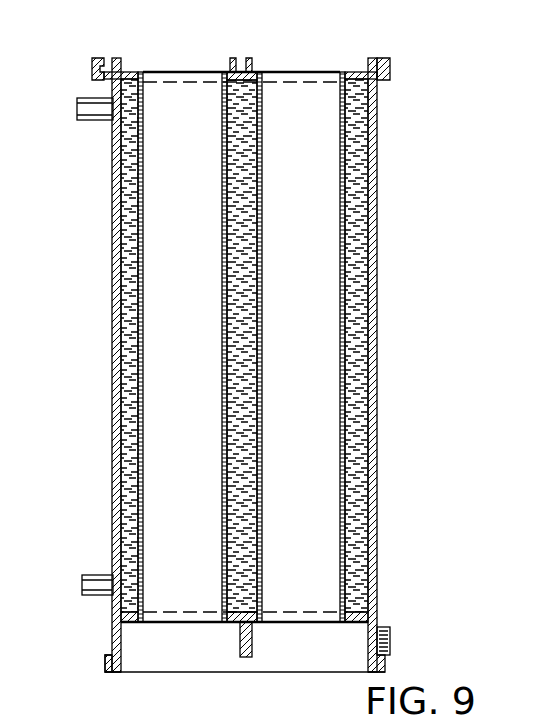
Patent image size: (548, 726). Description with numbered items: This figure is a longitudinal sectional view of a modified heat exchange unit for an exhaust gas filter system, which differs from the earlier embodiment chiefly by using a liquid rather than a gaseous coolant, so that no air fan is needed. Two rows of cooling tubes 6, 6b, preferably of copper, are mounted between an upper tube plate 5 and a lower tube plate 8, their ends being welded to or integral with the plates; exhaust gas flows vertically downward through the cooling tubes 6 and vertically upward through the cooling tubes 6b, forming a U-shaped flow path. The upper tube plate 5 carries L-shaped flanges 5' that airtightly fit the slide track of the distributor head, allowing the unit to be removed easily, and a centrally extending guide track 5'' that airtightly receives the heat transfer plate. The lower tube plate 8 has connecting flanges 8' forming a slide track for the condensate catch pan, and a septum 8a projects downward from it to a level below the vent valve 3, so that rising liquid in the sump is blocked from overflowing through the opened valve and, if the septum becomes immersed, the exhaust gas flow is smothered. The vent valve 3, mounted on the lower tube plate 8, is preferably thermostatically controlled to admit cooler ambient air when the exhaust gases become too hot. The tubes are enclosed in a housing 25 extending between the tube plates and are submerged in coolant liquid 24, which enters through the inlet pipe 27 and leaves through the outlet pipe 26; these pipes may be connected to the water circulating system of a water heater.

The vent valve 3 is at (390, 634).
The upper tube plate 5 is at (122, 60).
The L-shaped flange 5' is at (401, 61).
The guide track 5'' is at (258, 56).
The cooling tube 6 is at (340, 154).
The cooling tube 6b is at (222, 154).
The lower tube plate 8 is at (230, 643).
The connecting flange 8' is at (91, 661).
The septum 8a is at (252, 638).
The coolant liquid 24 is at (120, 333).
The housing 25 is at (120, 479).
The outlet pipe 26 is at (104, 120).
The inlet pipe 27 is at (93, 575).